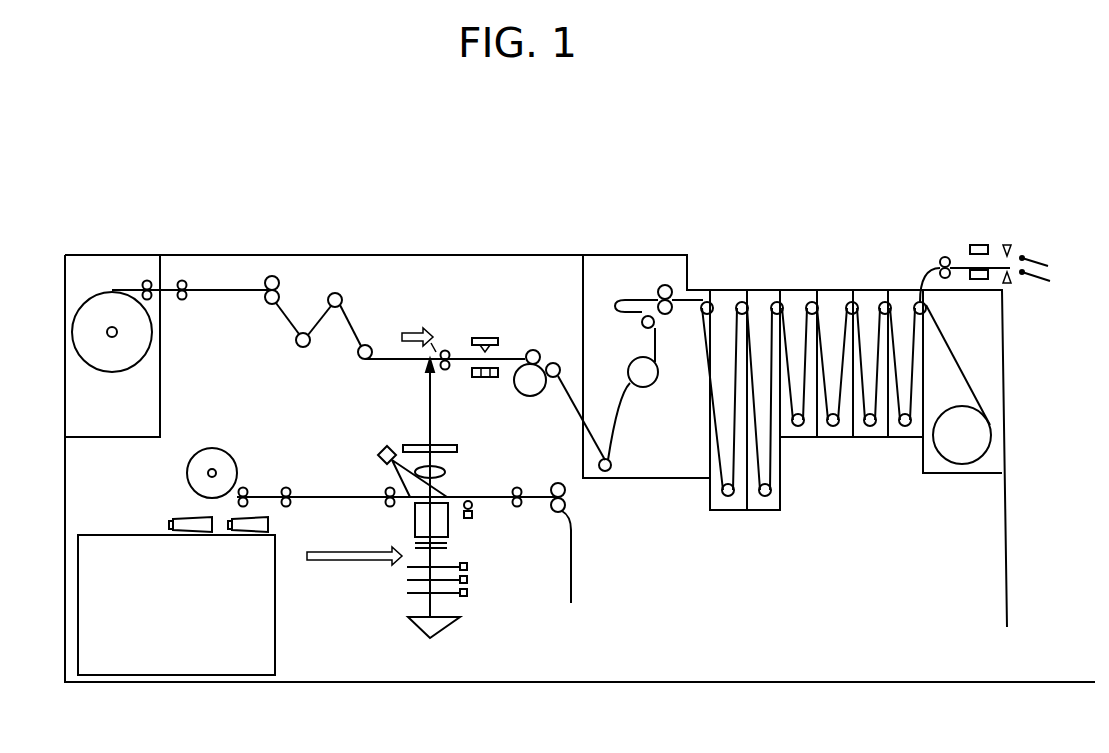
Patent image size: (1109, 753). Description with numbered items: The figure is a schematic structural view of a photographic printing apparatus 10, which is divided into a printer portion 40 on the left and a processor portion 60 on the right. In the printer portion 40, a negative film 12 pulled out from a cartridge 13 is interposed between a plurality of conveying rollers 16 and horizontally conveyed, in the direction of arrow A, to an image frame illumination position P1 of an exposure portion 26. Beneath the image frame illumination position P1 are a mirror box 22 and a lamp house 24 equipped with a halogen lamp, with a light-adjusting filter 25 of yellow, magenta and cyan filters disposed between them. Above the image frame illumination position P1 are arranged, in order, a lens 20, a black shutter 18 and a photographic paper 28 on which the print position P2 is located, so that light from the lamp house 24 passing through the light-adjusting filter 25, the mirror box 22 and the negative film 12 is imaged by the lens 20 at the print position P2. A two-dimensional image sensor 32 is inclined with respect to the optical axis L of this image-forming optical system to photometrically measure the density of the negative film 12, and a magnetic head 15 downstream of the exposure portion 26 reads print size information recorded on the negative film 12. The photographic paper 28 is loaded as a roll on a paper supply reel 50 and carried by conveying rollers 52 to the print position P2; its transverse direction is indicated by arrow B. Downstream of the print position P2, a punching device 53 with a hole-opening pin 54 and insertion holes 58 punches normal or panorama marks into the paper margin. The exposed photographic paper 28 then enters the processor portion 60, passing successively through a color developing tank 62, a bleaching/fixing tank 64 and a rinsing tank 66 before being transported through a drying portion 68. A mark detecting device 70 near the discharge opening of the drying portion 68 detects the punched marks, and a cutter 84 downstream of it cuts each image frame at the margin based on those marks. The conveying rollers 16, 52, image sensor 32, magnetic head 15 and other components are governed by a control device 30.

The photographic printing apparatus 10 is at (419, 162).
The negative film 12 is at (363, 496).
The cartridge 13 is at (187, 473).
The magnetic head 15 is at (476, 508).
The conveying rollers 16 is at (277, 488).
The black shutter 18 is at (452, 444).
The lens 20 is at (458, 478).
The mirror box 22 is at (450, 522).
The lamp house 24 is at (460, 620).
The light-adjusting filter 25 is at (470, 577).
The exposure portion 26 is at (386, 589).
The photographic paper 28 is at (392, 357).
The control device 30 is at (275, 677).
The two-dimensional image sensor 32 is at (383, 447).
The printer portion 40 is at (402, 253).
The paper supply reel 50 is at (112, 326).
The conveying rollers 52 is at (358, 346).
The punching device 53 is at (511, 332).
The hole-opening pin 54 is at (480, 336).
The insertion holes 58 is at (635, 270).
The processor portion 60 is at (681, 253).
The color developing tank 62 is at (753, 289).
The bleaching/fixing tank 64 is at (820, 289).
The rinsing tank 66 is at (898, 289).
The drying portion 68 is at (950, 303).
The mark detecting device 70 is at (986, 242).
The cutter 84 is at (1026, 259).
The direction of transport of the negative film A is at (320, 560).
The transverse direction B is at (418, 332).
The optical axis L is at (428, 395).
The image frame illumination position P1 is at (452, 481).
The print position P2 is at (437, 348).